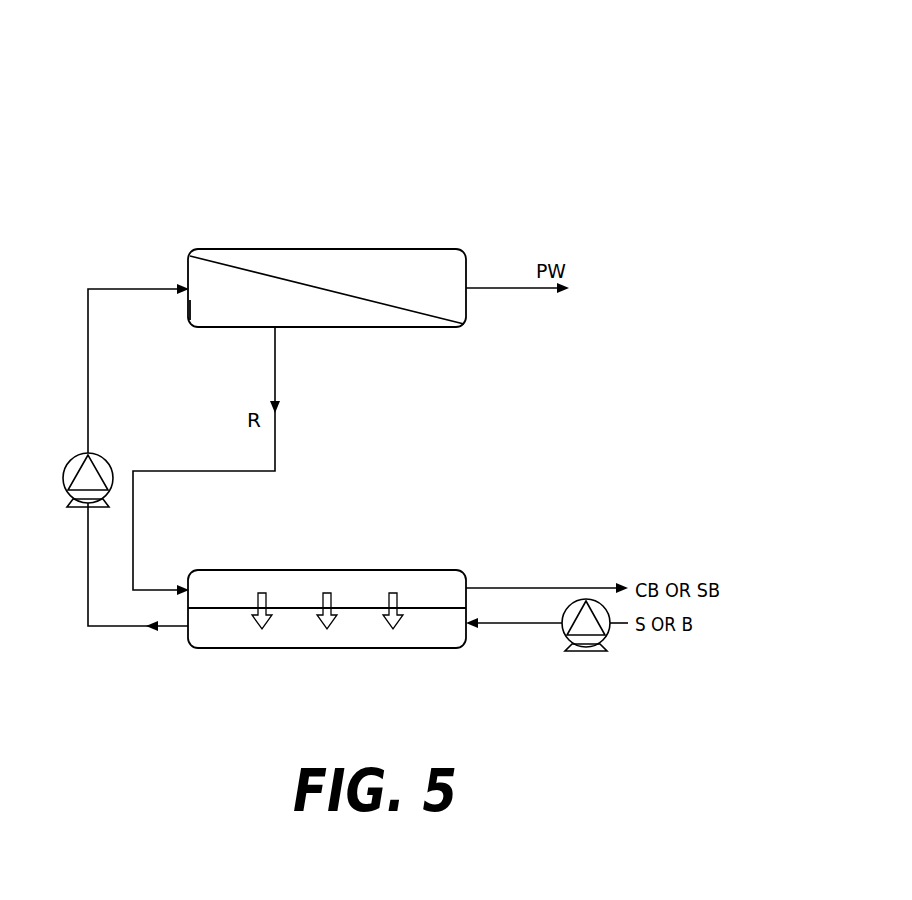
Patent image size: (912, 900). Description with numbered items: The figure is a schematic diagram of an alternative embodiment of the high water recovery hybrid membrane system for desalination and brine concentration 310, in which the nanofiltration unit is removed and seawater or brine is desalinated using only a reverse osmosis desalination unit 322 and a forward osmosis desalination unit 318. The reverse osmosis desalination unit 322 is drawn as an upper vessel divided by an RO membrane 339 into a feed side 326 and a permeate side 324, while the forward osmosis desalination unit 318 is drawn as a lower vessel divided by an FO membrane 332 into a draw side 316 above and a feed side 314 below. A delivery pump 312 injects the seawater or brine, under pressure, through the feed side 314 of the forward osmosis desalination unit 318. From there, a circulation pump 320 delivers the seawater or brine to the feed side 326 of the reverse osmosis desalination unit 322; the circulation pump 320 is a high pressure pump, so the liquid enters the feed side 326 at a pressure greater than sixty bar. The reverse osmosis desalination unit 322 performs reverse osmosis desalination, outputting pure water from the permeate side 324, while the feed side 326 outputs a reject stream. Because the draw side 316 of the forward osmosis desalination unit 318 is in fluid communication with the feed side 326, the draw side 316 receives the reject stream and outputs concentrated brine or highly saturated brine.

The high water recovery hybrid membrane system for desalination and brine concentrat 310 is at (84, 88).
The delivery pump 312 is at (598, 652).
The feed side of the forward osmosis desalination unit 314 is at (420, 638).
The draw side of the forward osmosis desalination unit 316 is at (436, 582).
The forward osmosis desalination unit 318 is at (217, 648).
The circulation pump 320 is at (74, 456).
The reverse osmosis desalination unit 322 is at (224, 249).
The permeate side of the reverse osmosis desalination unit 324 is at (389, 262).
The feed side of the reverse osmosis desalination unit 326 is at (212, 301).
The FO membrane 332 is at (221, 608).
The RO membrane 339 is at (318, 283).